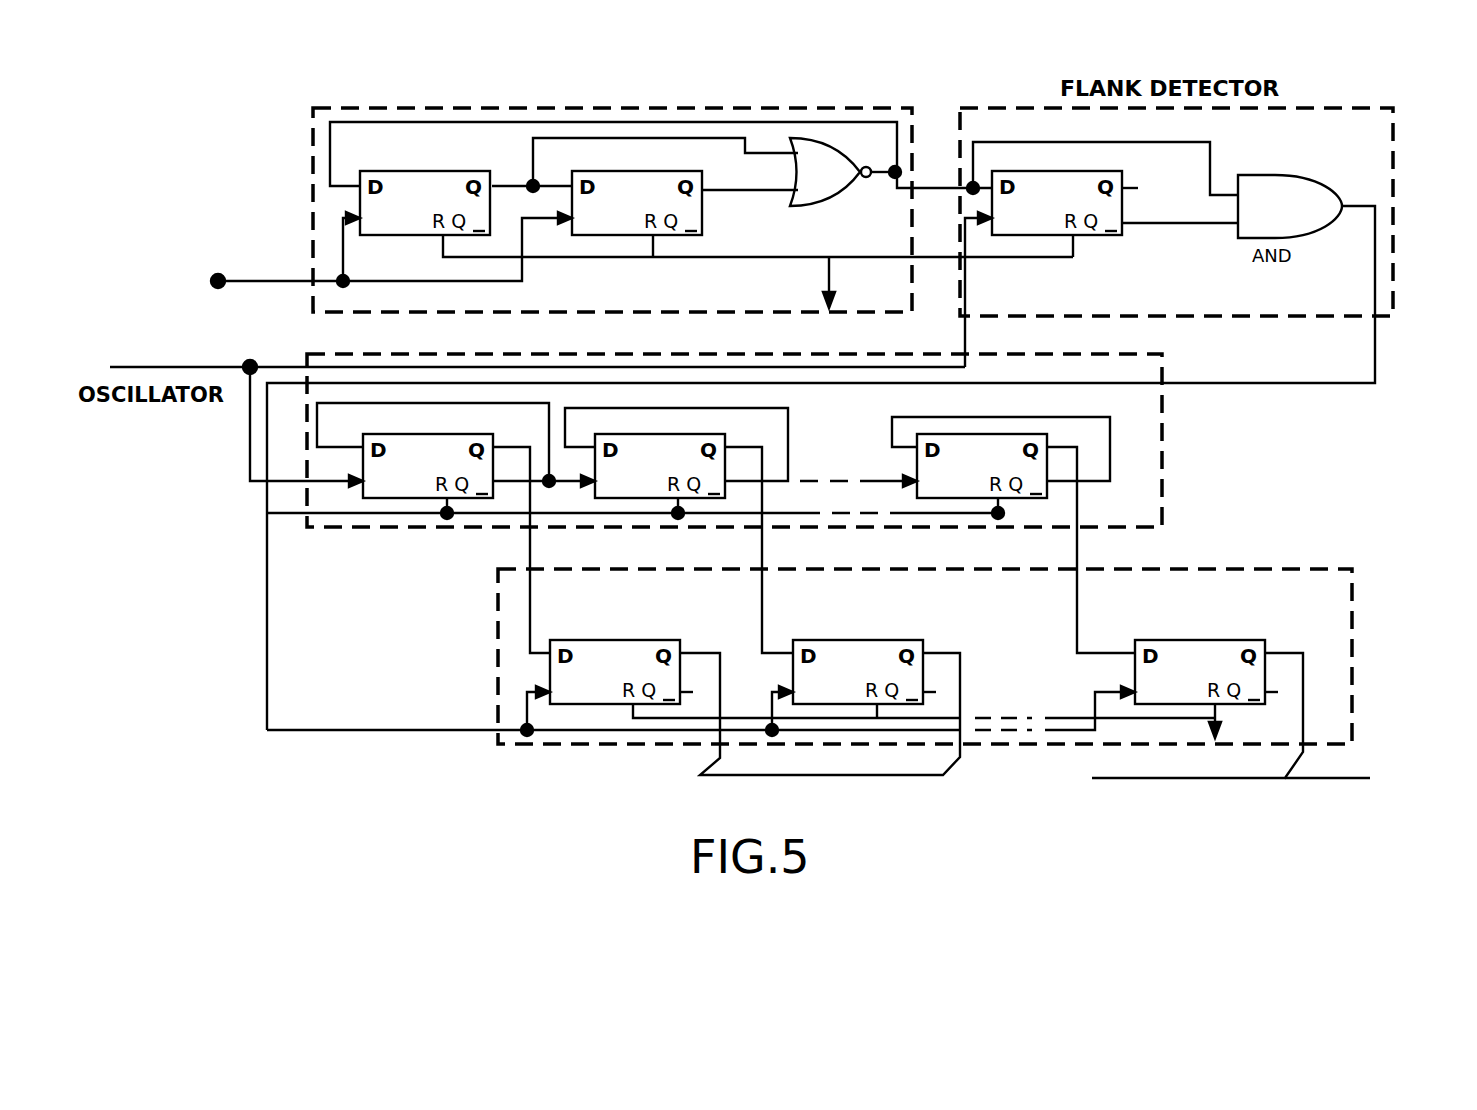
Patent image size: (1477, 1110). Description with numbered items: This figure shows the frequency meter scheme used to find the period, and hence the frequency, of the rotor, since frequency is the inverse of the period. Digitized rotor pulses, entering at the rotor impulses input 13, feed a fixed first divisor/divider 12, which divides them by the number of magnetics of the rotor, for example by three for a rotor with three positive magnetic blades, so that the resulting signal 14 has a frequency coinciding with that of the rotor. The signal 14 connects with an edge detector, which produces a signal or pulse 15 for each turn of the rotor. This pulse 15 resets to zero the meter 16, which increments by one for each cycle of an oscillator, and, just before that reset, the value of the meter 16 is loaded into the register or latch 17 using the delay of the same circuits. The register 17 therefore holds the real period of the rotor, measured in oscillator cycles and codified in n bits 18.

The fixed first divisor/divider 12 is at (742, 105).
The rotor impulses input 13 is at (273, 283).
The signal 14 is at (918, 185).
The signal or pulse 15 is at (1378, 366).
The meter 16 is at (1162, 497).
The register or latch 17 is at (497, 668).
The n bits 18 is at (1357, 782).